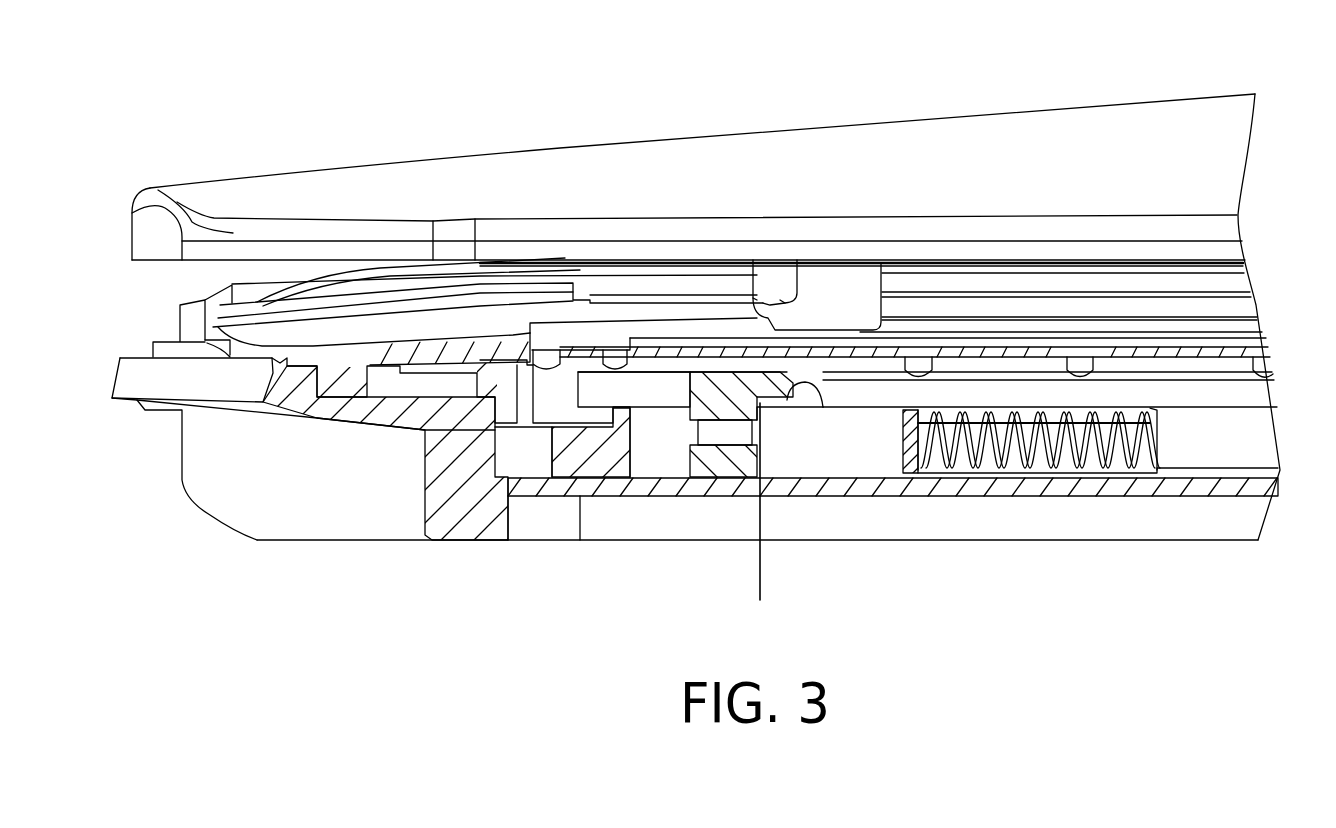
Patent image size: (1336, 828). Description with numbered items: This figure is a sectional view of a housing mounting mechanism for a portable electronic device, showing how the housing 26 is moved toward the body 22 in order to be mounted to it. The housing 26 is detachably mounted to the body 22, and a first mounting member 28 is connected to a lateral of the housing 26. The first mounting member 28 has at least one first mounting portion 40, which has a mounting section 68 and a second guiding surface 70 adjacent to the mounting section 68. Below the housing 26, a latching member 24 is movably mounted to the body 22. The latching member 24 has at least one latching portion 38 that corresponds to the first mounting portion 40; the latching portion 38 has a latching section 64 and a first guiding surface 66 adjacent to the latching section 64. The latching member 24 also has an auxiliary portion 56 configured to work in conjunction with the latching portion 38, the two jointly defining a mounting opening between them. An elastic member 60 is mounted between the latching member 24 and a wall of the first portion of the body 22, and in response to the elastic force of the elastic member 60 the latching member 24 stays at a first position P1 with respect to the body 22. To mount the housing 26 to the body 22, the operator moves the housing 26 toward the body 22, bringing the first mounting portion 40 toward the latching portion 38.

The body 22 is at (1207, 499).
The latching member 24 is at (1260, 413).
The housing 26 is at (873, 123).
The first mounting member 28 is at (1047, 258).
The latching portion 38 is at (698, 368).
The first mounting portion 40 is at (840, 283).
The auxiliary portion 56 is at (707, 460).
The elastic member 60 is at (1083, 457).
The latching section 64 is at (784, 390).
The first guiding surface 66 is at (823, 395).
The mounting section 68 is at (782, 295).
The second guiding surface 70 is at (757, 295).
The first position P1 is at (759, 515).